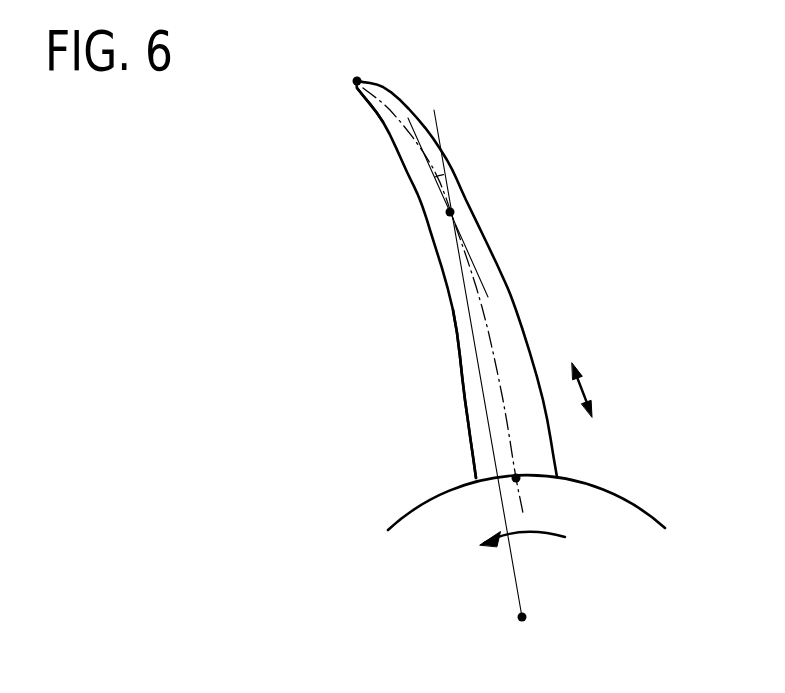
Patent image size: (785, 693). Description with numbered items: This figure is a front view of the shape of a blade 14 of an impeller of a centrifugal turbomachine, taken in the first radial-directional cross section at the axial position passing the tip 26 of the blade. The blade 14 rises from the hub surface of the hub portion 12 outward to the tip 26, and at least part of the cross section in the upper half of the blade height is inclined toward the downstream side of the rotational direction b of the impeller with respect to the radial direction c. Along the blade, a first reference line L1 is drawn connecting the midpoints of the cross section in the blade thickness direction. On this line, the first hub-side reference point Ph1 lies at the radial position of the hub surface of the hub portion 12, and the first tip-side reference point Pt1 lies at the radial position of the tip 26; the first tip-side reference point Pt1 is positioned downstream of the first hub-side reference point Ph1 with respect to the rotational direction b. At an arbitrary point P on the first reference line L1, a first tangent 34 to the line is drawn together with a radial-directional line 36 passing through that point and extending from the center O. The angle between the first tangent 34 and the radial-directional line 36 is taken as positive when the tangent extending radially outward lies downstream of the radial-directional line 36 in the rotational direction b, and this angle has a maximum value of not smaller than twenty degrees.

The hub portion 12 is at (637, 506).
The blade 14 is at (483, 222).
The tip 26 is at (357, 93).
The first tangent 34 is at (483, 283).
The radial-directional line 36 is at (490, 435).
The first reference line L1 is at (500, 363).
The first tip-side reference point Pt1 is at (357, 81).
The point on camber line P is at (450, 212).
The first hub-side reference point Ph1 is at (517, 478).
The rotation center O is at (522, 617).
The rotational direction b is at (522, 527).
The radial direction c is at (585, 390).